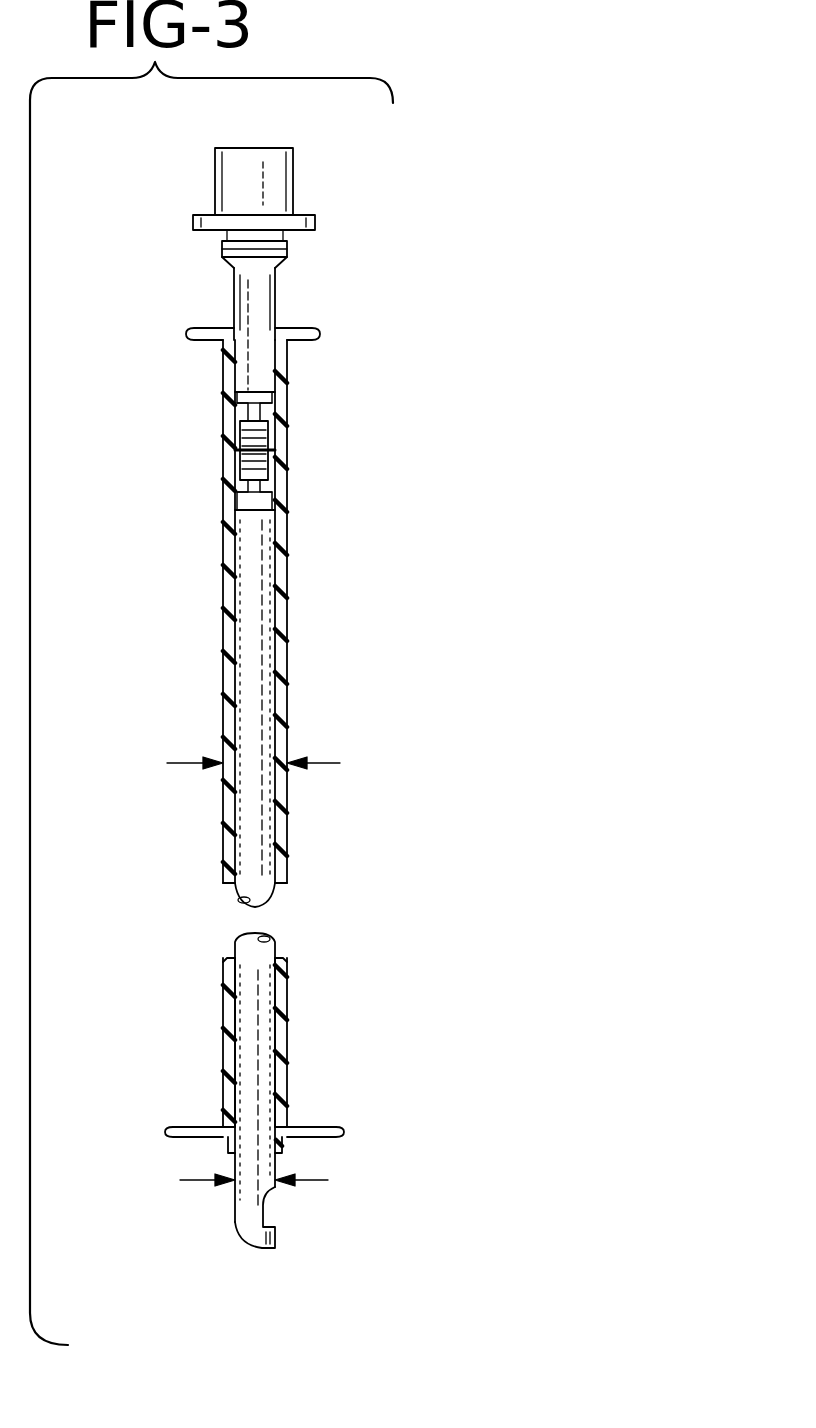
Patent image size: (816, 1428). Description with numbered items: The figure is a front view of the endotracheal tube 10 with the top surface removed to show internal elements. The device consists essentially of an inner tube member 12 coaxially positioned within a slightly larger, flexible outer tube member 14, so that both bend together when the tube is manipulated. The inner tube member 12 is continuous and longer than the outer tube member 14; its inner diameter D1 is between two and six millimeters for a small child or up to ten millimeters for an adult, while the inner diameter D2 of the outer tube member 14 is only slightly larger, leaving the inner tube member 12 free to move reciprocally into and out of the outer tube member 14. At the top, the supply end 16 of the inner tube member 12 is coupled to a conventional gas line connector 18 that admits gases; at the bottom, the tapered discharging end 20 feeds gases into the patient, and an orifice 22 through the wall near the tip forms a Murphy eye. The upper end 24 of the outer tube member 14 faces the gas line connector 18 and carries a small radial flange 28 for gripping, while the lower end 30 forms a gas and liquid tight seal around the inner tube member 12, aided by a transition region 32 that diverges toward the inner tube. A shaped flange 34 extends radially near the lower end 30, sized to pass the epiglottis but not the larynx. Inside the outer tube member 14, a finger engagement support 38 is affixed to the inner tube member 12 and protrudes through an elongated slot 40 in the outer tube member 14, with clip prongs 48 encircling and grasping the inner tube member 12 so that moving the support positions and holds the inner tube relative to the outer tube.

The endotracheal tube 10 is at (495, 188).
The inner tube member 12 is at (275, 296).
The outer tube member 14 is at (223, 642).
The supply end 16 is at (283, 247).
The gas line connector 18 is at (272, 172).
The discharging end 20 is at (262, 1250).
The orifice 22 is at (265, 1210).
The upper end 24 is at (240, 334).
The radial flange 28 is at (317, 333).
The lower end 30 is at (282, 1150).
The transition region 32 is at (228, 1140).
The shaped flange 34 is at (327, 1127).
The finger engagement support 38 is at (243, 423).
The elongated slot 40 is at (237, 448).
The clip prongs 48 is at (243, 393).
The inner diameter of the inner tube member D1 is at (192, 1180).
The inner diameter of the outer tube member D2 is at (182, 763).